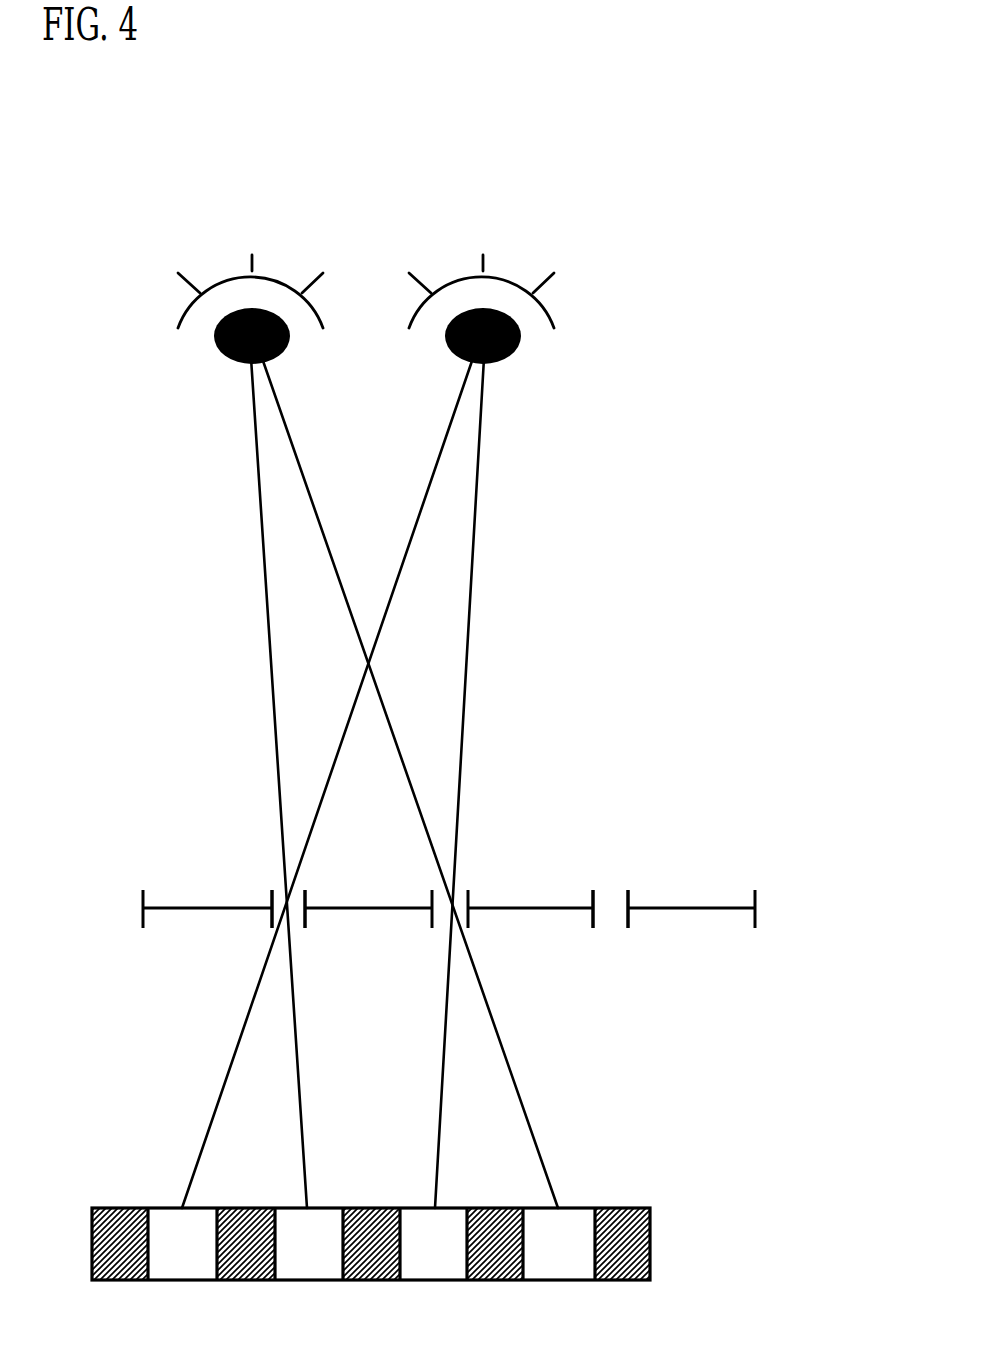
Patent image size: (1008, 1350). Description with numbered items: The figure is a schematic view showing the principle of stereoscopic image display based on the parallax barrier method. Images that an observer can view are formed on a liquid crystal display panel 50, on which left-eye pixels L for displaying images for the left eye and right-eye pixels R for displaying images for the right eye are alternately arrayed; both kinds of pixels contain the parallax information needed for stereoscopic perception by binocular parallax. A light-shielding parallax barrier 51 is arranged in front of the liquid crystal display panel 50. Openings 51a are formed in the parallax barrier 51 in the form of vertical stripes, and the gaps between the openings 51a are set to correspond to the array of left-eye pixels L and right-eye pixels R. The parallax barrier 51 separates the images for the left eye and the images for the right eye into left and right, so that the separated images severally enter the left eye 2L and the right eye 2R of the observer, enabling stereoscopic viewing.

The right eye 2R is at (214, 352).
The left eye 2L is at (521, 352).
The parallax barrier 51 is at (758, 904).
The openings 51a is at (286, 930).
The liquid crystal display panel 50 is at (652, 1240).